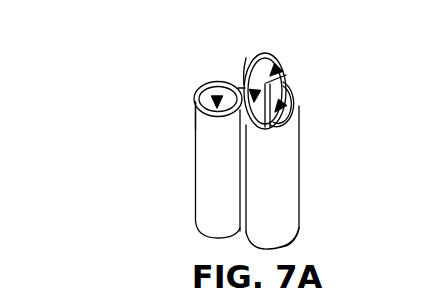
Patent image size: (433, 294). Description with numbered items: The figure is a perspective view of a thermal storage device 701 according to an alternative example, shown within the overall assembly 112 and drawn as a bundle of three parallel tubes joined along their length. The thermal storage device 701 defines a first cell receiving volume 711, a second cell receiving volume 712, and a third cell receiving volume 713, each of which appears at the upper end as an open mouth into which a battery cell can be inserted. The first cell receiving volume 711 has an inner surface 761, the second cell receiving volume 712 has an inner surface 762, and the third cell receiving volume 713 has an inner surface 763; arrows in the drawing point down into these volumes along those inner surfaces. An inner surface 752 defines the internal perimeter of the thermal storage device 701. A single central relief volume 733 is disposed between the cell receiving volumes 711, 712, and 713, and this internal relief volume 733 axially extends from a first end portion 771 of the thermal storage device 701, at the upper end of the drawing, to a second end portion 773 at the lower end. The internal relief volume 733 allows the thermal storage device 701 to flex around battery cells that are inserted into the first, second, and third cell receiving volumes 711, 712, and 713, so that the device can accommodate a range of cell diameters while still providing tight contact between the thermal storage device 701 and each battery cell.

The catheter assembly 112 is at (97, 25).
The thermal storage device 701 is at (199, 172).
The first cell receiving volume 711 is at (216, 96).
The second cell receiving volume 712 is at (285, 70).
The third cell receiving volume 713 is at (299, 105).
The central relief volume 733 is at (246, 58).
The inner surface 752 is at (279, 68).
The inner surface 761 is at (198, 89).
The inner surface 762 is at (254, 90).
The inner surface 763 is at (282, 102).
The first end portion 771 is at (194, 103).
The second end portion 773 is at (300, 236).